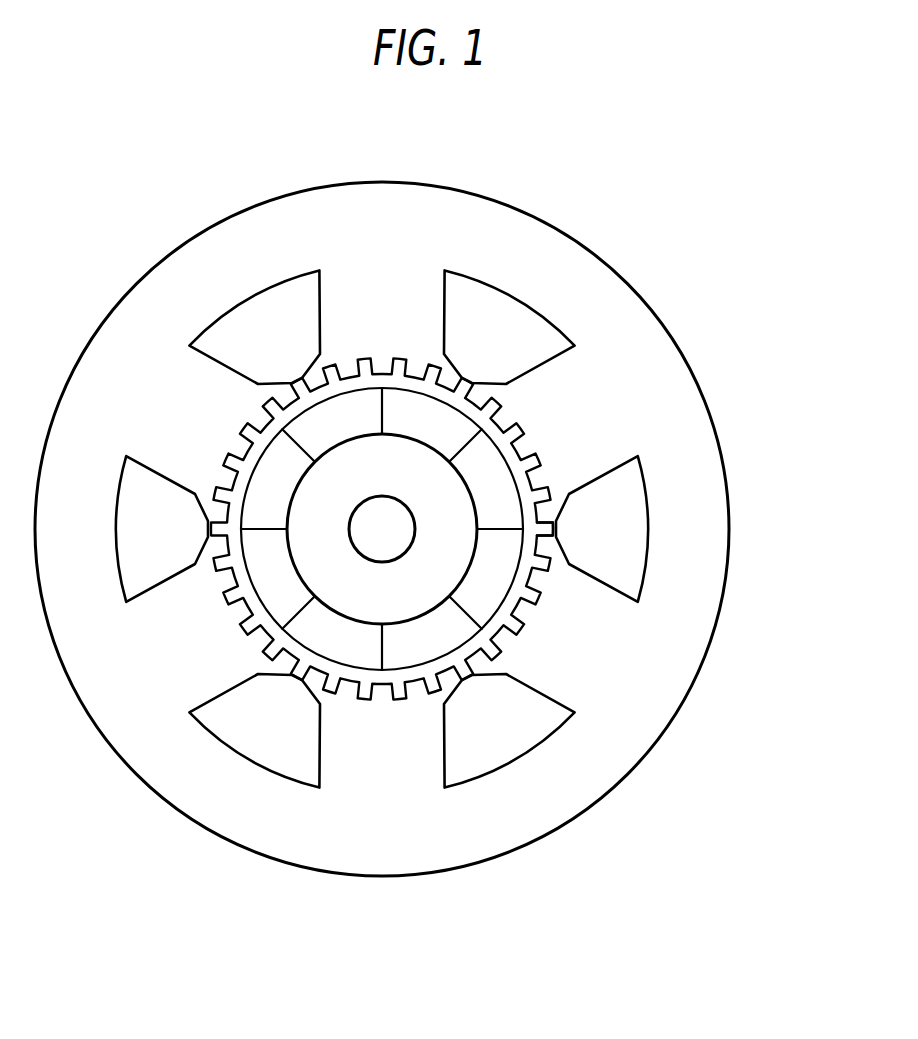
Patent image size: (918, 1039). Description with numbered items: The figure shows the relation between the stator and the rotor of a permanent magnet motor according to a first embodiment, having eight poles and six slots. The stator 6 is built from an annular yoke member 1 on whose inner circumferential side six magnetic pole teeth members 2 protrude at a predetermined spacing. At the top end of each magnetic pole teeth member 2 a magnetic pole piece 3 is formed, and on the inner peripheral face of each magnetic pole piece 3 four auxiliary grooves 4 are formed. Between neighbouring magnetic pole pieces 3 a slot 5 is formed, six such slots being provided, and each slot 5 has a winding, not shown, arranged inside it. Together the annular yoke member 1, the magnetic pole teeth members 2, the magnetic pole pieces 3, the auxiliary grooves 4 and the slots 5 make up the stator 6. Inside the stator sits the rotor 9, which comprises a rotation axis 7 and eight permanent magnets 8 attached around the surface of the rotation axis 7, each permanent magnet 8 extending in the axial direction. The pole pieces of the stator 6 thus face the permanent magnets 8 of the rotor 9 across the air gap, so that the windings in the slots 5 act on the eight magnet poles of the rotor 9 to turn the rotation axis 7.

The annular yoke member 1 is at (597, 283).
The magnetic pole teeth members 2 is at (608, 375).
The magnetic pole pieces 3 is at (533, 442).
The auxiliary grooves 4 is at (553, 503).
The slot 5 is at (545, 527).
The stator 6 is at (787, 362).
The rotation axis 7 is at (453, 568).
The permanent magnets 8 is at (453, 632).
The rotor 9 is at (748, 781).